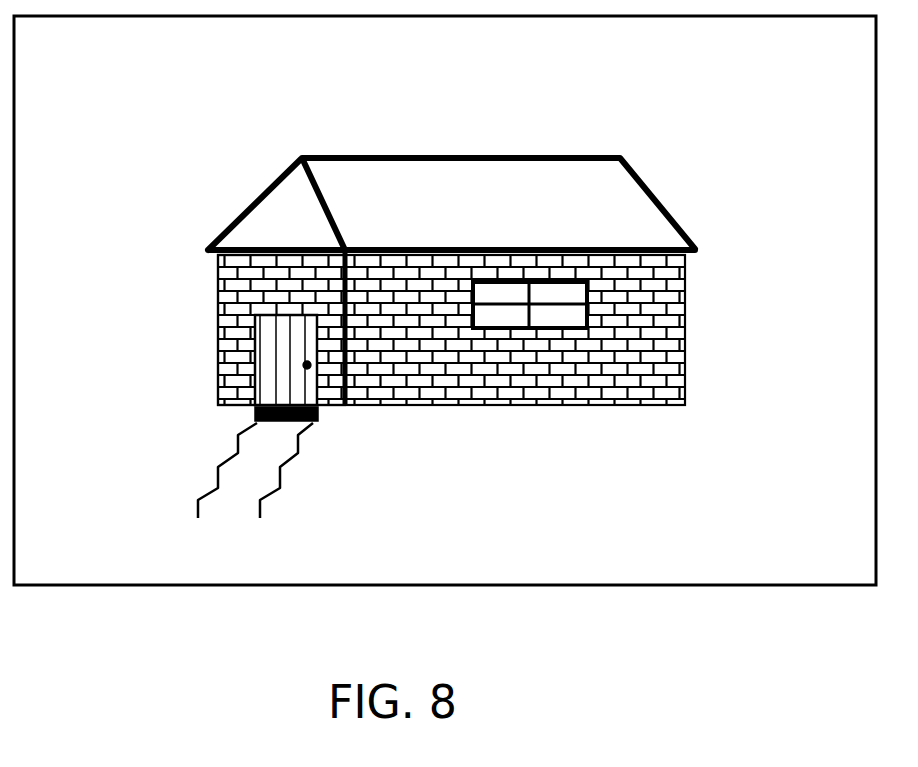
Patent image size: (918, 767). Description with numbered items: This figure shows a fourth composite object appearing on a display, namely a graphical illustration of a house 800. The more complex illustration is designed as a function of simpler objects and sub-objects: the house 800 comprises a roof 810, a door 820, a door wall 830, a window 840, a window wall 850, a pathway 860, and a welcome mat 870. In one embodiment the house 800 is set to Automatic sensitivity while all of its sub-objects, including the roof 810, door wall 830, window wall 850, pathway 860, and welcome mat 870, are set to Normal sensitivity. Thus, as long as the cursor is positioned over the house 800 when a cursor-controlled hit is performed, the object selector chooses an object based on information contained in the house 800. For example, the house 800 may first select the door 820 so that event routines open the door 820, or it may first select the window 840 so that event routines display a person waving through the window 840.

The house 800 is at (703, 114).
The roof 810 is at (470, 185).
The door 820 is at (317, 408).
The door wall 830 is at (238, 296).
The window 840 is at (505, 293).
The window wall 850 is at (655, 347).
The pathway 860 is at (253, 467).
The welcome mat 870 is at (262, 410).